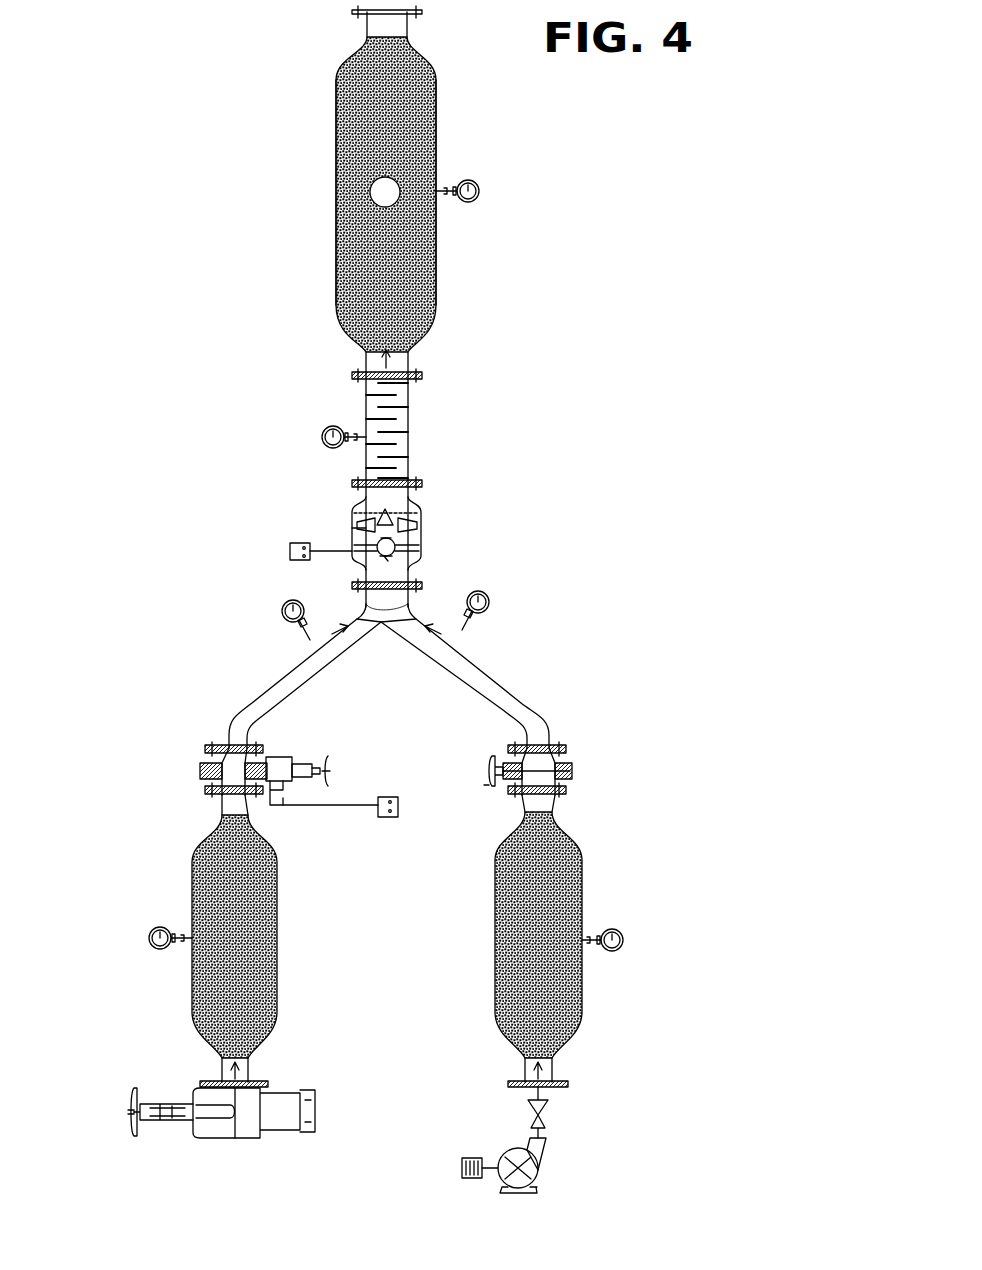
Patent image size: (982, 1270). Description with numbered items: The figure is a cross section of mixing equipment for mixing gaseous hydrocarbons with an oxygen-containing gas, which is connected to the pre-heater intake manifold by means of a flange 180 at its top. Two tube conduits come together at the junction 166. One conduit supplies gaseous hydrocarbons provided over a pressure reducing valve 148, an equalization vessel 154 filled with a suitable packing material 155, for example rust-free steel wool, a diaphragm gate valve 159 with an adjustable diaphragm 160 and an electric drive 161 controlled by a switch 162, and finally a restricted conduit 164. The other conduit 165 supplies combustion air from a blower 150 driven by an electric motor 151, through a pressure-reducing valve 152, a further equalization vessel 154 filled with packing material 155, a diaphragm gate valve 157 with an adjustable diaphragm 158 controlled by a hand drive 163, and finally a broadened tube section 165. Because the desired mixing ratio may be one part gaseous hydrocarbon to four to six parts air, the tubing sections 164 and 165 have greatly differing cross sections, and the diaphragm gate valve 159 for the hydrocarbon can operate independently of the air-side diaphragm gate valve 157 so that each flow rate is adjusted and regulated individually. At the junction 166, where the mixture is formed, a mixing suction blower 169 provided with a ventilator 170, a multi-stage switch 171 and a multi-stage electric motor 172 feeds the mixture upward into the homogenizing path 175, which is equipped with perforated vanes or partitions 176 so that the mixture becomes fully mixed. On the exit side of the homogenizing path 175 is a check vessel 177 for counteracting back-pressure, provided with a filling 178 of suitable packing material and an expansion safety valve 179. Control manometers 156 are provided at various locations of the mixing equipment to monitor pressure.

The pressure reducing valve 148 is at (210, 1090).
The blower 150 is at (522, 1152).
The electric motor 151 is at (470, 1158).
The pressure-reducing valve 152 is at (546, 1105).
The equalization vessel 154 is at (495, 964).
The packing material 155 is at (495, 881).
The control manometers 156 is at (479, 191).
The diaphragm gate valve 157 is at (560, 788).
The adjustable diaphragm 158 is at (572, 770).
The diaphragm gate valve 159 is at (232, 787).
The adjustable diaphragm 160 is at (212, 771).
The electric drive 161 is at (282, 783).
The switch 162 is at (388, 817).
The hand drive 163 is at (490, 762).
The restricted conduit 164 is at (268, 662).
The broadened tube section 165 is at (440, 665).
The junction 166 is at (382, 604).
The mixing suction blower 169 is at (415, 535).
The ventilator 170 is at (413, 507).
The multi-stage switch 171 is at (290, 556).
The multi-stage electric motor 172 is at (352, 528).
The homogenizing path 175 is at (400, 430).
The perforated vanes or partitions 176 is at (409, 391).
The check vessel 177 is at (436, 266).
The filling 178 is at (436, 230).
The expansion safety valve 179 is at (380, 192).
The flange 180 is at (355, 12).